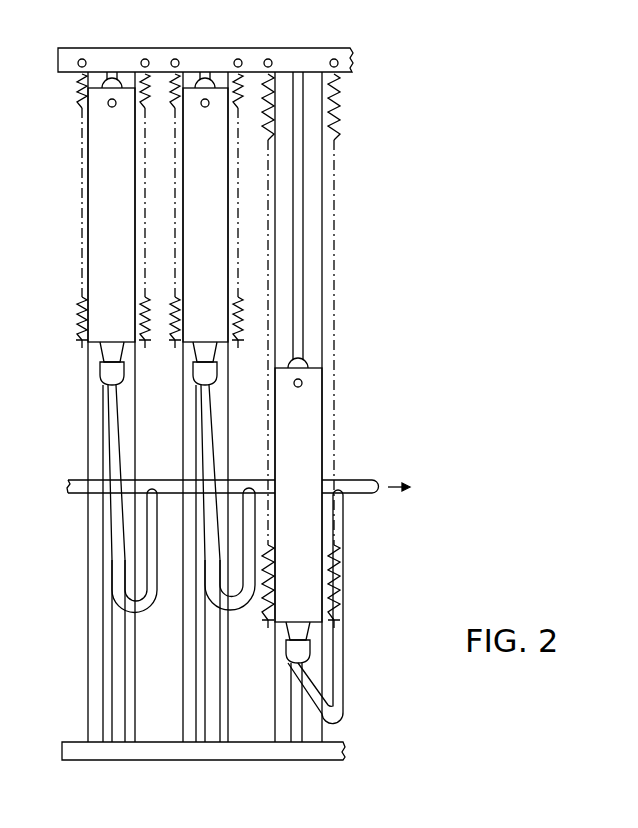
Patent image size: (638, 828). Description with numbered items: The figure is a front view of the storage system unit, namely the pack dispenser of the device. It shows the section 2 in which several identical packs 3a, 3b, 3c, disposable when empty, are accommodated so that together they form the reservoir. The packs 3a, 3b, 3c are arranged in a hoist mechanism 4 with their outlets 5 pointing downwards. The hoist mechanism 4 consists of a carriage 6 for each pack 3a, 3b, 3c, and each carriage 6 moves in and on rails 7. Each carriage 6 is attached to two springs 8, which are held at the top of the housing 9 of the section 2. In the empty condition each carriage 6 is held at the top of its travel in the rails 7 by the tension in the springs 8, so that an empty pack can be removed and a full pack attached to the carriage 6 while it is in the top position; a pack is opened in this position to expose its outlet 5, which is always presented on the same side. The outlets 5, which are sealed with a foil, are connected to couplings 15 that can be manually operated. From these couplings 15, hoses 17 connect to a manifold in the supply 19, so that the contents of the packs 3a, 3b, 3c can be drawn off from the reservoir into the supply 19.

The section 2 is at (163, 44).
The pack 3a is at (103, 237).
The pack 3b is at (200, 270).
The pack 3c is at (305, 418).
The hoist mechanism 4 is at (250, 80).
The outlet 5 is at (103, 352).
The carriage 6 is at (103, 88).
The rails 7 is at (92, 447).
The springs 8 is at (143, 203).
The housing 9 is at (97, 58).
The coupling 15 is at (108, 372).
The hoses 17 is at (143, 607).
The supply 19 is at (358, 487).